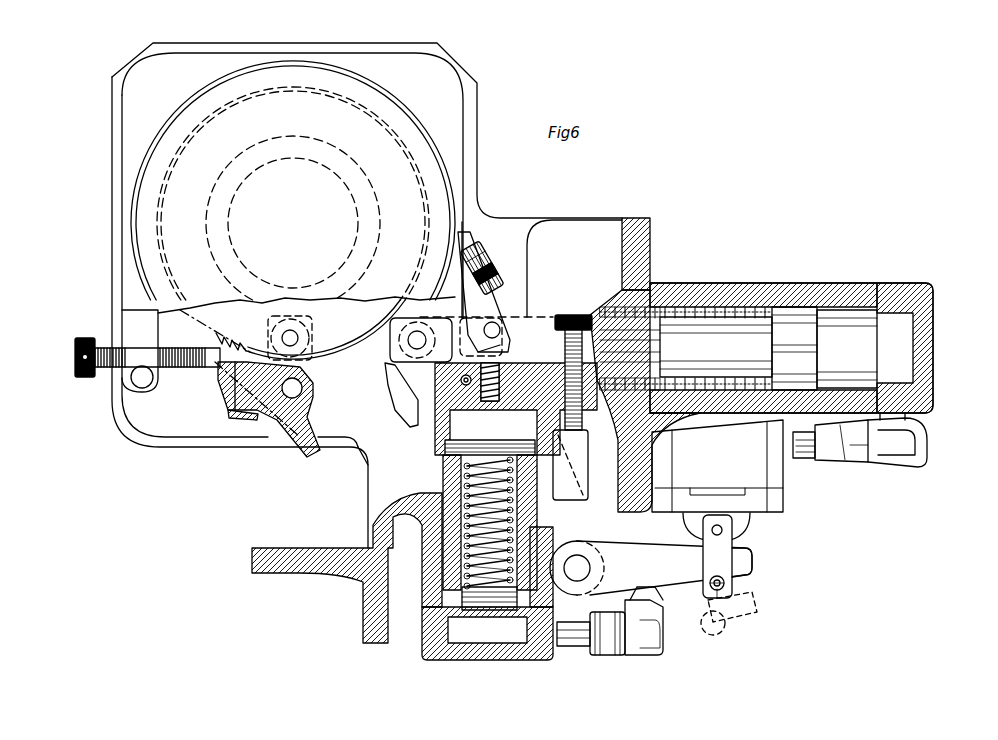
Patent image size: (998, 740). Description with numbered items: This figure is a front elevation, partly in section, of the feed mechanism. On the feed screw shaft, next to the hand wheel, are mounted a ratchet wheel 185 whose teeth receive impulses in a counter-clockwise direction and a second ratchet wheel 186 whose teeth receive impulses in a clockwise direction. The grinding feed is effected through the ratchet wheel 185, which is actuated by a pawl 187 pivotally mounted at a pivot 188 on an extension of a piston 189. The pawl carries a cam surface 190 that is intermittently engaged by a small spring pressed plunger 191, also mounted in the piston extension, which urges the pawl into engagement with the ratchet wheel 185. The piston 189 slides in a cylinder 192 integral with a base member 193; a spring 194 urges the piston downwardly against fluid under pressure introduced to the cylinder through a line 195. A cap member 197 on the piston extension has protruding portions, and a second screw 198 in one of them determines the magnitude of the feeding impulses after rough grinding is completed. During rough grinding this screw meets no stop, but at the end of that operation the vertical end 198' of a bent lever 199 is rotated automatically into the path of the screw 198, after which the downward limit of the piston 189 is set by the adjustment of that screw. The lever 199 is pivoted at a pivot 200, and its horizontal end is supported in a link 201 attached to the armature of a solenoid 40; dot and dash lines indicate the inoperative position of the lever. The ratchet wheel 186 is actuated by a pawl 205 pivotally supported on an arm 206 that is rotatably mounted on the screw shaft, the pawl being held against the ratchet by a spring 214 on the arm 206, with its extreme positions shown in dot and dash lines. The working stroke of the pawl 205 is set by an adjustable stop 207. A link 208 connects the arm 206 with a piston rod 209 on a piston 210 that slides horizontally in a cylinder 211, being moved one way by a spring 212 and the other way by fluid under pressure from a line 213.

The ratchet wheel 185 is at (443, 159).
The second ratchet wheel 186 is at (157, 313).
The pawl 187 is at (468, 250).
The pivot 188 is at (497, 331).
The piston 189 is at (425, 588).
The cam surface 190 is at (497, 348).
The spring pressed plunger 191 is at (488, 362).
The cylinder 192 is at (423, 611).
The base member 193 is at (356, 452).
The spring 194 is at (462, 556).
The line 195 is at (673, 635).
The cap member 197 is at (434, 452).
The second screw 198 is at (577, 374).
The body 198' is at (649, 365).
The bent lever 199 is at (753, 561).
The pivot 200 is at (590, 567).
The link 201 is at (733, 545).
The pawl 205 is at (250, 415).
The arm 206 is at (320, 378).
The adjustable stop 207 is at (83, 377).
The link 208 is at (390, 362).
The piston rod 209 is at (652, 300).
The piston 210 is at (800, 305).
The cylinder 211 is at (848, 283).
The spring 212 is at (690, 307).
The line 213 is at (908, 445).
The spring 214 is at (233, 413).
The solenoid 40 is at (778, 479).